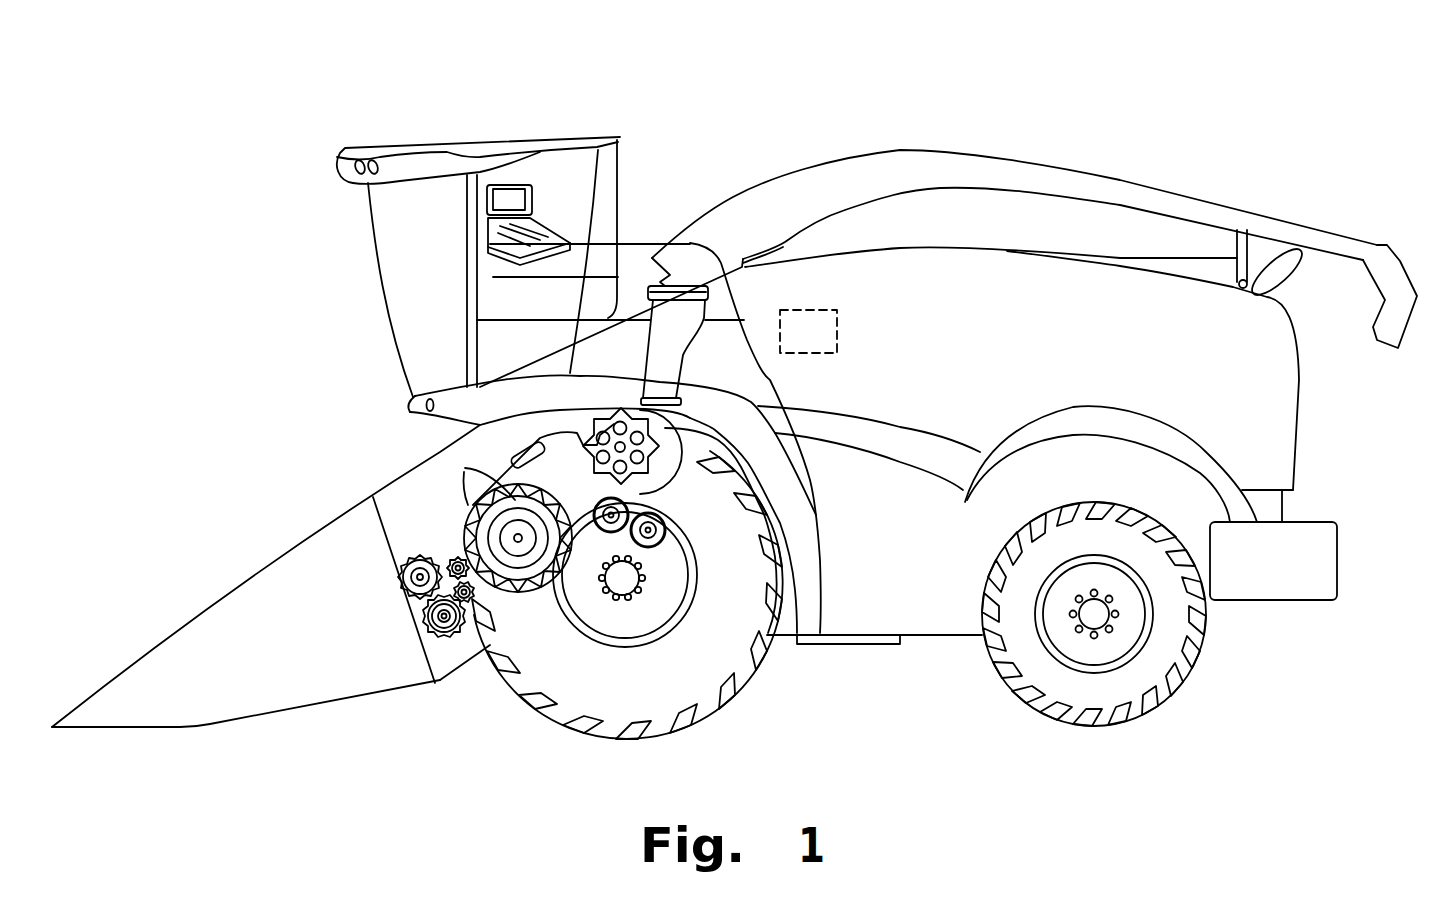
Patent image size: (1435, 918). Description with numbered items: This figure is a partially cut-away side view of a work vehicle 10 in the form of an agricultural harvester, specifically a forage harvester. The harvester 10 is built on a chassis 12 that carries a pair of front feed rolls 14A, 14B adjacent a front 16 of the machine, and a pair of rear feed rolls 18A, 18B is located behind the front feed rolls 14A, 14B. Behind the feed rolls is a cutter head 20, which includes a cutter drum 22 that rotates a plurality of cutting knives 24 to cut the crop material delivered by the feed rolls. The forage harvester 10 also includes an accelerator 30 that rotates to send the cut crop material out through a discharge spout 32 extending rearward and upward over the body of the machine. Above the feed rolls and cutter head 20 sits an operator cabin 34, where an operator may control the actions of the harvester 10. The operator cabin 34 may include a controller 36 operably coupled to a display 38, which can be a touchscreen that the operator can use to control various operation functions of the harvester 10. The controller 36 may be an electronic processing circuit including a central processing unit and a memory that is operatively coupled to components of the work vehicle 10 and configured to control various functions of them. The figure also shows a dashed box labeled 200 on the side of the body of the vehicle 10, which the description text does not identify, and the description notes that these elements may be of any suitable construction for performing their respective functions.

The work vehicle 10 is at (300, 263).
The chassis 12 is at (789, 500).
The front feed roll 14A is at (408, 581).
The front feed roll 14B is at (424, 637).
The front 16 is at (410, 712).
The rear feed roll 18A is at (460, 557).
The rear feed roll 18B is at (472, 596).
The cutter head 20 is at (548, 612).
The cutter drum 22 is at (538, 565).
The cutting knives 24 is at (467, 470).
The accelerator 30 is at (604, 407).
The discharge spout 32 is at (887, 135).
The operator cabin 34 is at (430, 122).
The controller 36 is at (570, 241).
The display 38 is at (511, 196).
The control system 200 is at (838, 323).